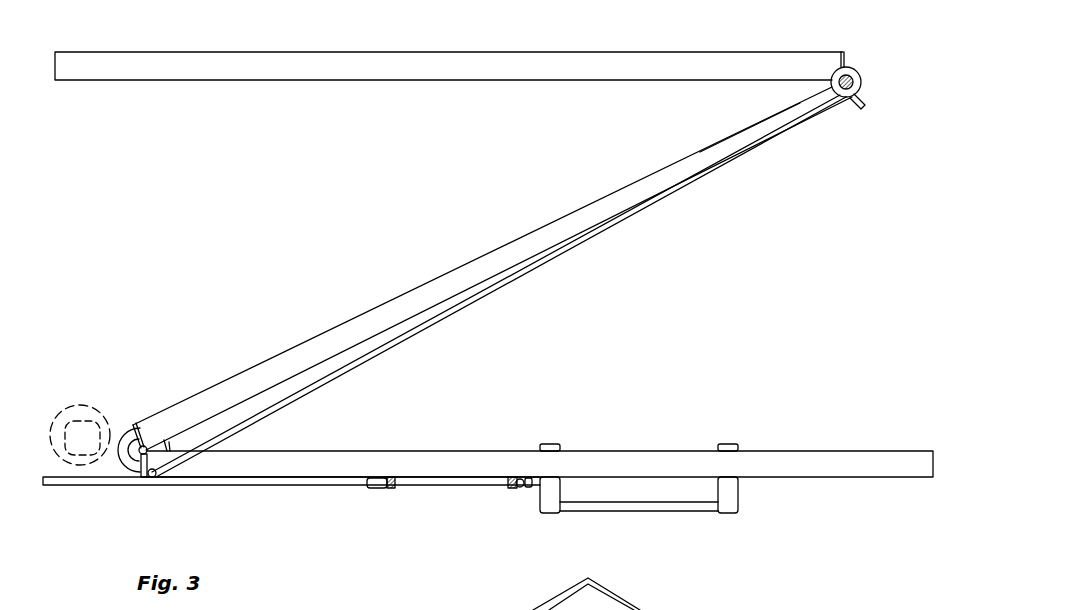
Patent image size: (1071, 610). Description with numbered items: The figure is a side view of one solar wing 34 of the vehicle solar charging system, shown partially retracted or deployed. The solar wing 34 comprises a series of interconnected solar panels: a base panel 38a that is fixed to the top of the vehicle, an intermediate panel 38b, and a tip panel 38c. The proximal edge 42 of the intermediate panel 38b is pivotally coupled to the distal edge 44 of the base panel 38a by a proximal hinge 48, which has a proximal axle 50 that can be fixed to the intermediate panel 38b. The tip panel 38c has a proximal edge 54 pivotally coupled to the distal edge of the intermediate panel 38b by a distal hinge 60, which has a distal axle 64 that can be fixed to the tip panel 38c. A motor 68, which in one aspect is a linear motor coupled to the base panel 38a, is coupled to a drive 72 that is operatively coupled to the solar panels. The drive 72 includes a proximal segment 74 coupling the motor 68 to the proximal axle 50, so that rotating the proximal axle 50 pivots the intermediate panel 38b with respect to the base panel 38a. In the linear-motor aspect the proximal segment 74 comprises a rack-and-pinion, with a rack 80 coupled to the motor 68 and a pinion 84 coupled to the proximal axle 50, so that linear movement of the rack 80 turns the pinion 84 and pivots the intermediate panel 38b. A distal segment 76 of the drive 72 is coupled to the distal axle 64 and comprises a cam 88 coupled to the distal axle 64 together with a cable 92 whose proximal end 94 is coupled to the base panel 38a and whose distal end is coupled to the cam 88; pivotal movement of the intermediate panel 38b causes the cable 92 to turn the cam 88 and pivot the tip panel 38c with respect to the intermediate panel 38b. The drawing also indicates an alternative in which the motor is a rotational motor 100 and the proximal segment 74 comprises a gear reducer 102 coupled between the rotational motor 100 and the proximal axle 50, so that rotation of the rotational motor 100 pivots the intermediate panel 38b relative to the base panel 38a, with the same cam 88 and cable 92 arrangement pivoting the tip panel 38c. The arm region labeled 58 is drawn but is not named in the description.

The solar wing 34 is at (170, 244).
The base panel 38a is at (488, 471).
The intermediate panel 38b is at (438, 285).
The tip panel 38c is at (143, 70).
The proximal edge 42 is at (247, 378).
The distal edge 44 is at (540, 446).
The proximal hinge 48 is at (130, 428).
The proximal axle 50 is at (138, 470).
The proximal edge 54 is at (746, 62).
The arm upper end 58 is at (810, 128).
The distal hinge 60 is at (862, 19).
The distal axle 64 is at (858, 81).
The motor 68 is at (697, 497).
The drive 72 is at (397, 488).
The proximal segment 74 is at (428, 488).
The distal segment 76 is at (698, 177).
The rack 80 is at (262, 484).
The pinion 84 is at (120, 430).
The cam 88 is at (858, 96).
The cable 92 is at (474, 298).
The proximal end 94 is at (156, 479).
The rotational motor 100 is at (62, 412).
The gear reducer 102 is at (83, 445).